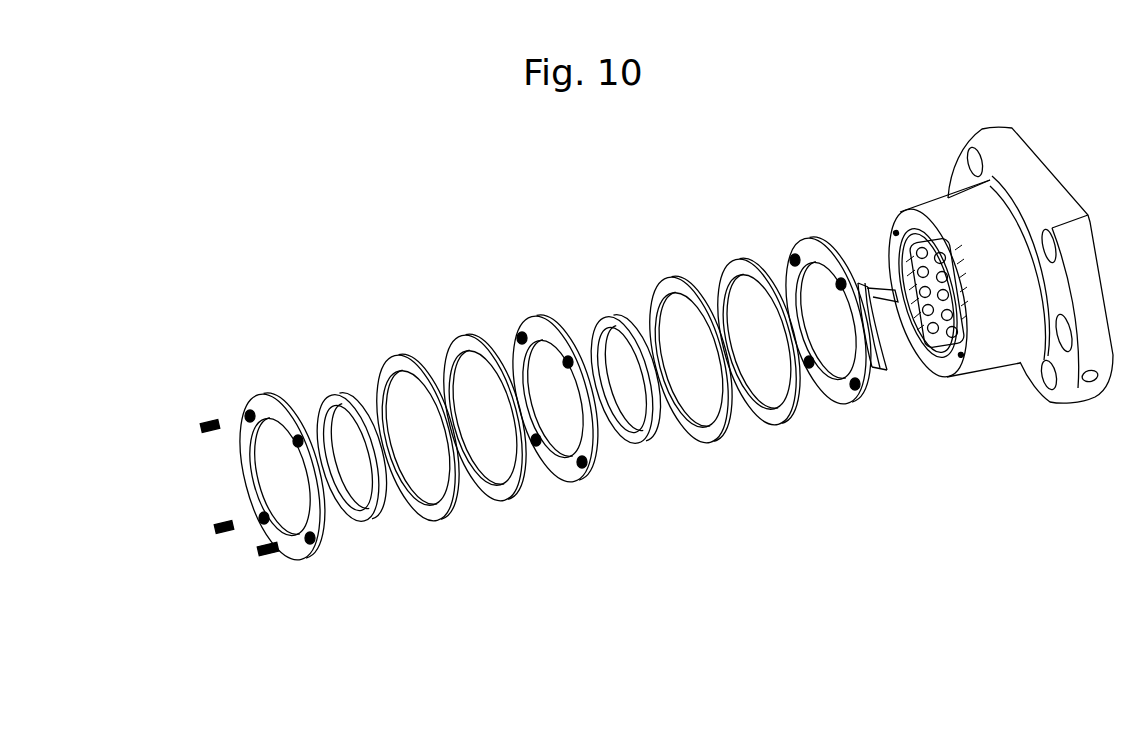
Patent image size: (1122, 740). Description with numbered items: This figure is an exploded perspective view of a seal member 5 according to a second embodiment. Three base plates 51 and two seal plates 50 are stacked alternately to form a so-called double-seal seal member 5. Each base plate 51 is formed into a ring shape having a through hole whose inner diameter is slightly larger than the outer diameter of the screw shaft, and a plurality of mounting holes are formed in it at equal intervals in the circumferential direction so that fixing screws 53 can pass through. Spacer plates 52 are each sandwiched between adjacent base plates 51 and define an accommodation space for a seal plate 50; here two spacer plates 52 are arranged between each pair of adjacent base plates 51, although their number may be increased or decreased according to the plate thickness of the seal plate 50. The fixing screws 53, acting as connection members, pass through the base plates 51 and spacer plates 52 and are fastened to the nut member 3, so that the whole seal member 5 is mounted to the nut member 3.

The nut member 3 is at (1048, 147).
The seal member 5 is at (227, 386).
The seal plate 50 is at (364, 523).
The base plate 51 is at (301, 563).
The spacer plate 52 is at (437, 522).
The fixing screw 53 is at (220, 537).